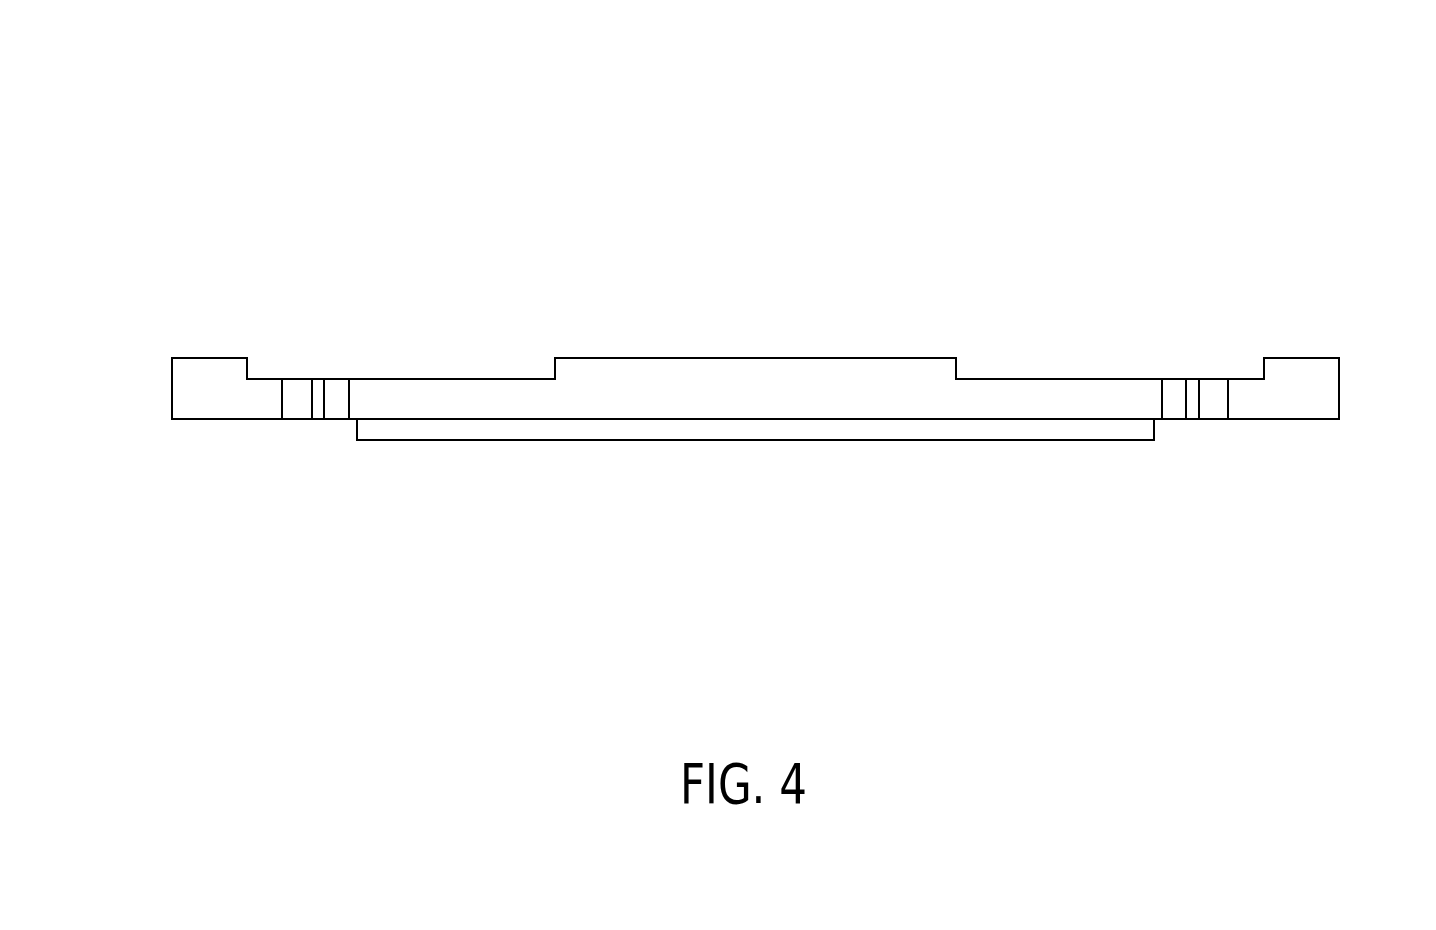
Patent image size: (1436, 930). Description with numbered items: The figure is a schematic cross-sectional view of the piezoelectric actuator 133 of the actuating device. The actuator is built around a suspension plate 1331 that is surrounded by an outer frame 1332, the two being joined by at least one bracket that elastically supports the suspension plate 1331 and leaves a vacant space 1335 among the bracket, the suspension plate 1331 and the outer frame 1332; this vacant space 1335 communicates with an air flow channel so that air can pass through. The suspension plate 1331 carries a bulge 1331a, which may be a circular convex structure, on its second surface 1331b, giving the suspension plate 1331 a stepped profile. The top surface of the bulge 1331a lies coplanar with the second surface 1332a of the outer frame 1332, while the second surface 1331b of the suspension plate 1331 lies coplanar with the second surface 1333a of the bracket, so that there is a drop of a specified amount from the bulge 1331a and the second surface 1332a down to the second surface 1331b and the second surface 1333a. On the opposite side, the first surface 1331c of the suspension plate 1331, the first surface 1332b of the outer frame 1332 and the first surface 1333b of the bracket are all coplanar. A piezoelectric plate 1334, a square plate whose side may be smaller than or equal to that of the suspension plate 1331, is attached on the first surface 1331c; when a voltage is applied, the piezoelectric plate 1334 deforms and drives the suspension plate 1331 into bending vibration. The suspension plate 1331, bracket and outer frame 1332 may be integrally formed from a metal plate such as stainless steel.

The piezoelectric actuator 133 is at (751, 300).
The suspension plate 1331 is at (978, 402).
The bulge 1331a is at (758, 355).
The second surface of the suspension plate 1331b is at (408, 378).
The first surface of the suspension plate 1331c is at (458, 420).
The outer frame 1332 is at (230, 381).
The second surface of the outer frame 1332a is at (193, 358).
The first surface of the outer frame 1332b is at (217, 419).
The second surface of the bracket 1333a is at (1190, 379).
The first surface of the bracket 1333b is at (1192, 419).
The piezoelectric plate 1334 is at (753, 433).
The vacant space 1335 is at (320, 377).